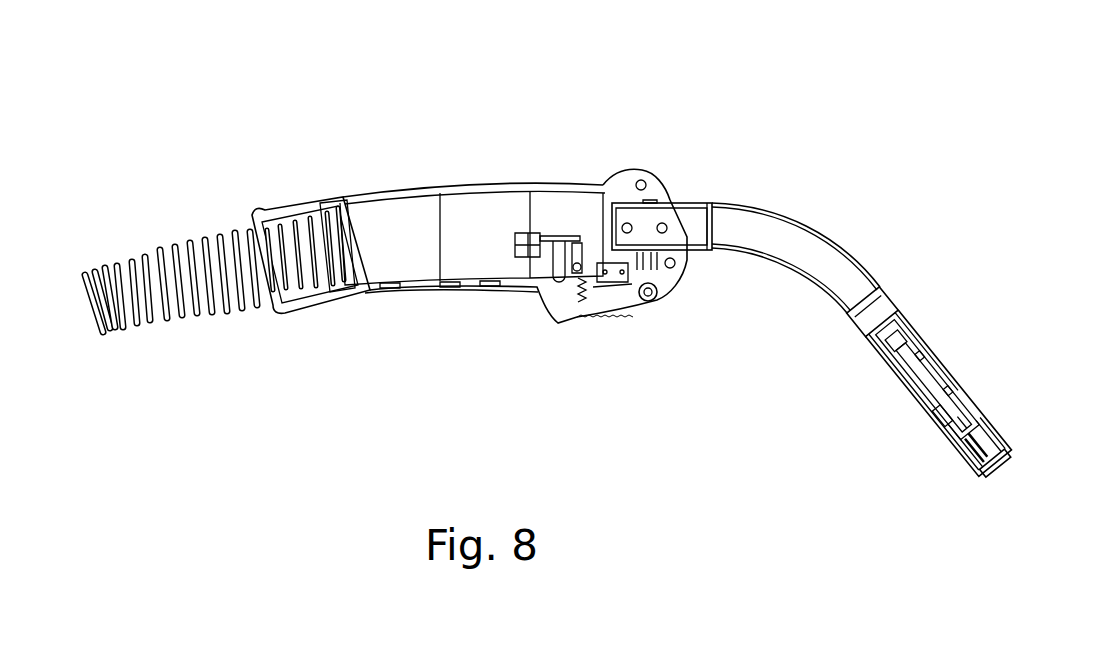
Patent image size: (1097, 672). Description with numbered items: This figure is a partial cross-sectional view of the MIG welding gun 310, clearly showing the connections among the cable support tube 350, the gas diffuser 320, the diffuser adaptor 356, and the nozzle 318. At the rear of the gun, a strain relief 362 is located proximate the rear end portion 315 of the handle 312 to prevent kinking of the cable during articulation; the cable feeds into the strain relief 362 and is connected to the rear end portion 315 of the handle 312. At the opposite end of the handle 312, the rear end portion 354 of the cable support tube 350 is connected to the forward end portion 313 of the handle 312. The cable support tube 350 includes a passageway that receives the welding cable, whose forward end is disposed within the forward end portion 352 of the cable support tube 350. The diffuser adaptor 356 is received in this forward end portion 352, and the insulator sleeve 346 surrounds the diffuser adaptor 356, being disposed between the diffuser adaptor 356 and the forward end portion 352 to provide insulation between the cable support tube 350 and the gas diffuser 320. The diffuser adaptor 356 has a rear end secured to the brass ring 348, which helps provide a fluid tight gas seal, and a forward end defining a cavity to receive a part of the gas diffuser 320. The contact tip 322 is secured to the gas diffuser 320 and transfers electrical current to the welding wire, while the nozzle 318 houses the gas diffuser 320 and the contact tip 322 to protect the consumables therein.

The MIG welding gun 310 is at (860, 90).
The handle 312 is at (481, 178).
The forward end portion of the handle 313 is at (648, 167).
The rear end portion of the handle 315 is at (263, 210).
The nozzle 318 is at (957, 370).
The gas diffuser 320 is at (913, 402).
The contact tip 322 is at (1000, 470).
The insulator sleeve 346 is at (927, 342).
The brass ring 348 is at (855, 318).
The cable support tube 350 is at (816, 225).
The forward end portion of the cable support tube 352 is at (907, 312).
The rear end portion of the cable support tube 354 is at (686, 200).
The diffuser adapter 356 is at (890, 363).
The strain relief 362 is at (131, 255).